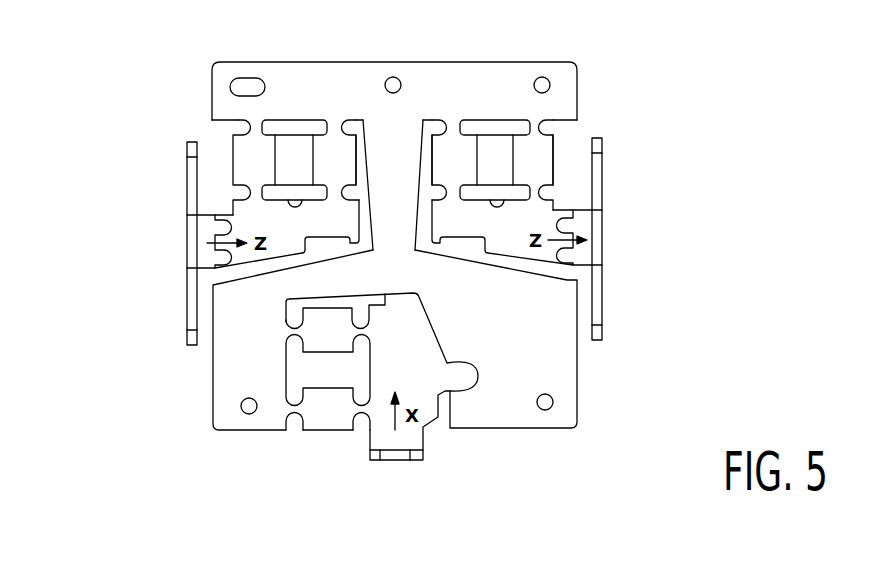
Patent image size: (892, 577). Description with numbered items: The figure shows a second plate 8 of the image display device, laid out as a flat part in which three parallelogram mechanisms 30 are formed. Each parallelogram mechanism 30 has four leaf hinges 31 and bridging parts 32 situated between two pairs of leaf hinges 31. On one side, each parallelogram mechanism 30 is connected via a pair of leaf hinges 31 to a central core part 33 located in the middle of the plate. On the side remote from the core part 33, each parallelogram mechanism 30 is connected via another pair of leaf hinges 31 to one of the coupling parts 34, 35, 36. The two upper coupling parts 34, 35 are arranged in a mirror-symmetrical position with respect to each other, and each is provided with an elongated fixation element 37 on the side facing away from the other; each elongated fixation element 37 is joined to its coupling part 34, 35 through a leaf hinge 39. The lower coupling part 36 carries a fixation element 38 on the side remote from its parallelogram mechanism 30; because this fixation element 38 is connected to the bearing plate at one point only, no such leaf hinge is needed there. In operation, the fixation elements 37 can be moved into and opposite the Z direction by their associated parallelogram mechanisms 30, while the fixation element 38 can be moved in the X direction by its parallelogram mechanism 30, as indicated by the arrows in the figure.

The second plate 8 is at (132, 142).
The parallelogram mechanism 30 is at (317, 100).
The leaf hinge 31 is at (253, 131).
The bridging part 32 is at (432, 155).
The central core part 33 is at (402, 213).
The coupling part 34 is at (303, 239).
The coupling part 35 is at (510, 239).
The coupling part 36 is at (400, 373).
The elongated fixation element 37 is at (188, 255).
The fixation element 38 is at (395, 462).
The leaf hinge 39 is at (218, 222).